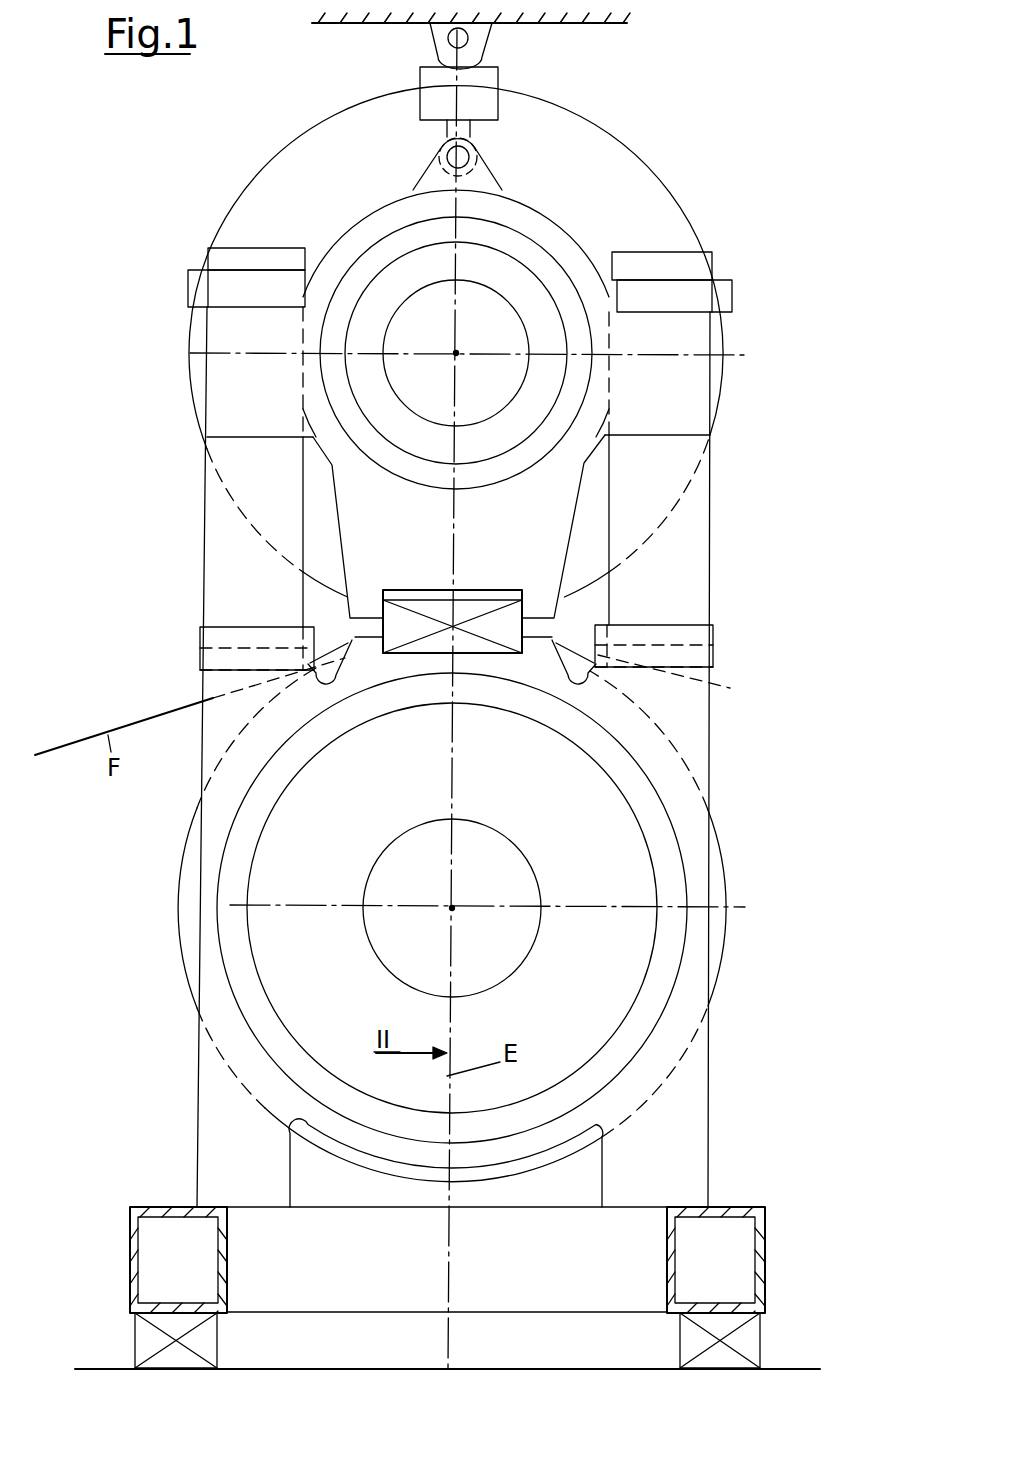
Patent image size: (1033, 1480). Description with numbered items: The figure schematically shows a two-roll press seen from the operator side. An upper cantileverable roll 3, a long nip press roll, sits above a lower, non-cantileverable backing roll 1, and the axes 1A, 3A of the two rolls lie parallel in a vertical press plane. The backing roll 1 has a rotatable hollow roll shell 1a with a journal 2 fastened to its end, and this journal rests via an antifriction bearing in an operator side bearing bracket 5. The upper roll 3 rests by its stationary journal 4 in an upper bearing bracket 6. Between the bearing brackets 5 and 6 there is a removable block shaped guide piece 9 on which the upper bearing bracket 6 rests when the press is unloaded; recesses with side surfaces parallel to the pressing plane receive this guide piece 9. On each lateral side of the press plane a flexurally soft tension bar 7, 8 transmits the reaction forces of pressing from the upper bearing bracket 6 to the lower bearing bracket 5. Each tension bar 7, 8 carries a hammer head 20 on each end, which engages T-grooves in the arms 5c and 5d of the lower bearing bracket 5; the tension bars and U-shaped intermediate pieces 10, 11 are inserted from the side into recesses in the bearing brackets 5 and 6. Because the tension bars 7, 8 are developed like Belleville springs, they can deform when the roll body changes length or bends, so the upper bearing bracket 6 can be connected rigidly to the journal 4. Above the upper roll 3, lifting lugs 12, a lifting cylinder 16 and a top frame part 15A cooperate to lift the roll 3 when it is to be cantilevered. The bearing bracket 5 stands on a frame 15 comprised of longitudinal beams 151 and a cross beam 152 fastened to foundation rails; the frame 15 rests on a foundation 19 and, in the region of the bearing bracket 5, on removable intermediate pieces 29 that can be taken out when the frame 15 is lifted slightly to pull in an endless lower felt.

The backing roll 1 is at (178, 934).
The axis of backing roll 1A is at (450, 905).
The hollow roll shell 1a is at (712, 935).
The journal 2 is at (516, 882).
The upper cantileverable roll 3 is at (651, 203).
The axis of upper roll 3A is at (457, 352).
The stationary journal 4 is at (393, 283).
The operator side bearing bracket 5 is at (685, 997).
The arm of lower bearing bracket 5c is at (213, 687).
The arm of lower bearing bracket 5d is at (687, 730).
The upper bearing bracket 6 is at (545, 228).
The flexurally soft tension bar 7 is at (680, 582).
The flexurally soft tension bar 8 is at (207, 527).
The guide piece 9 is at (478, 608).
The U-shaped intermediate piece 10 is at (720, 298).
The U-shaped intermediate piece 11 is at (242, 288).
The lifting lug 12 is at (483, 170).
The frame 15 is at (785, 1247).
The top frame part 15A is at (343, 24).
The lifting cylinder 16 is at (435, 92).
The foundation 19 is at (78, 1367).
The hammer head 20 is at (643, 262).
The removable intermediate piece 29 is at (207, 1345).
The longitudinal beam 151 is at (227, 1264).
The cross beam 152 is at (480, 1298).